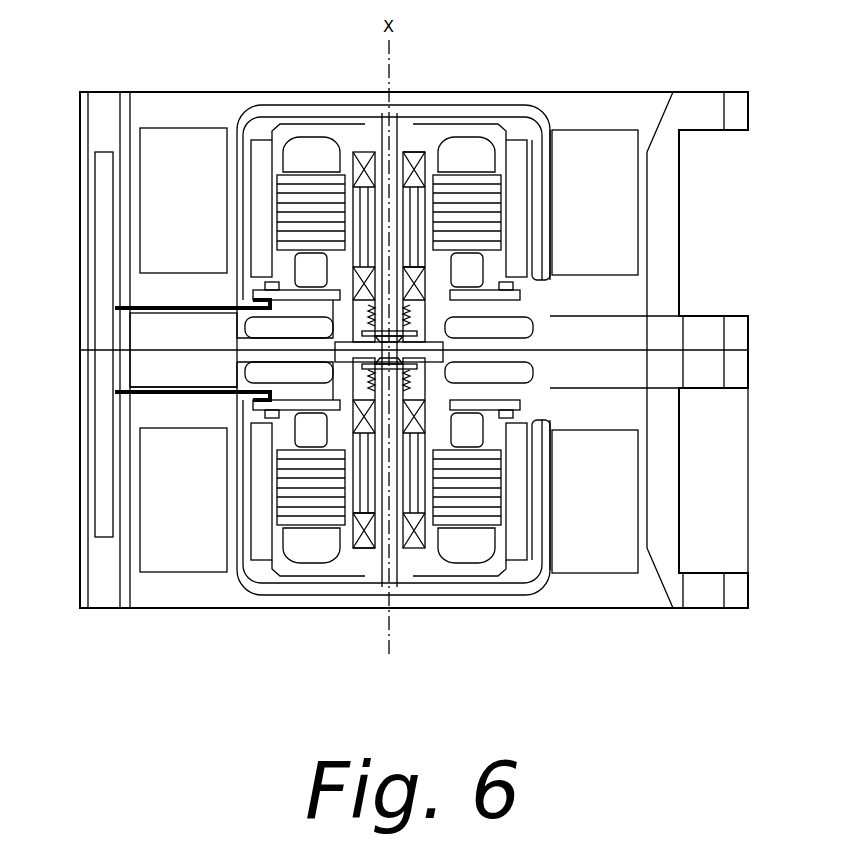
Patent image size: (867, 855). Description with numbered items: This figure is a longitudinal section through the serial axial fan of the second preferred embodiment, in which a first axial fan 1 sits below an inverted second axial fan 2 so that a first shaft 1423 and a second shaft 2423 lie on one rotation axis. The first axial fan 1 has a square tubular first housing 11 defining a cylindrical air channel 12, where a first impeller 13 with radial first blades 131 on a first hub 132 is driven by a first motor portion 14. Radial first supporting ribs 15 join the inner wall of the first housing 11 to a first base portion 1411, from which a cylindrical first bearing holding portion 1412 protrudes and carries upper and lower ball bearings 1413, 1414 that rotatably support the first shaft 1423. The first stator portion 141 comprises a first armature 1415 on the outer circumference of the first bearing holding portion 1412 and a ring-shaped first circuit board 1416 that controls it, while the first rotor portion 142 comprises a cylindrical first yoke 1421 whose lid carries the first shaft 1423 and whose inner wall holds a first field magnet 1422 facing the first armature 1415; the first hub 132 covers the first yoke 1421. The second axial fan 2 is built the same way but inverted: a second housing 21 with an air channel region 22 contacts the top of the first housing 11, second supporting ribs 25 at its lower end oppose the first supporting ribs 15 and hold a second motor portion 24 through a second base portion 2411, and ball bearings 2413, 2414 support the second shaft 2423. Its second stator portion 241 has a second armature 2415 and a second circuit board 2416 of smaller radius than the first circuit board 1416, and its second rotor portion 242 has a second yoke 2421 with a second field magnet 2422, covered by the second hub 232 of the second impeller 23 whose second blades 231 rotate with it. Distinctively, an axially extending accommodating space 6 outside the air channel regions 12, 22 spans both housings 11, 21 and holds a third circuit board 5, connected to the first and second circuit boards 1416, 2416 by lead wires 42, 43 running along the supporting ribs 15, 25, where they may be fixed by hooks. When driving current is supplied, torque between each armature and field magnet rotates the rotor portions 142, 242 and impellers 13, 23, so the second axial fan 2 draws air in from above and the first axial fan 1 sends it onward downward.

The first axial fan 1 is at (772, 466).
The second axial fan 2 is at (620, 68).
The third circuit board 5 is at (105, 160).
The accommodating space 6 is at (118, 117).
The first housing 11 is at (672, 457).
The air channel 12 is at (183, 513).
The first impeller 13 is at (205, 577).
The first motor portion 14 is at (494, 614).
The first supporting ribs 15 is at (150, 375).
The second housing 21 is at (668, 284).
The air channel region 22 is at (183, 187).
The second impeller 23 is at (195, 112).
The second motor portion 24 is at (490, 100).
The second supporting ribs 25 is at (147, 325).
The lead wire 42 is at (175, 306).
The first wire 43 is at (185, 388).
The first blades 131 is at (598, 563).
The first hub 132 is at (423, 593).
The first stator portion 141 is at (261, 483).
The first rotor portion 142 is at (547, 578).
The second blades 231 is at (600, 140).
The second hub 232 is at (268, 113).
The second stator portion 241 is at (261, 218).
The second rotor portion 242 is at (516, 122).
The first base portion 1411 is at (500, 390).
The first bearing holding portion 1412 is at (540, 498).
The ball bearing 1413 is at (300, 410).
The ball bearing 1414 is at (368, 560).
The first armature 1415 is at (290, 562).
The first circuit board 1416 is at (540, 450).
The first yoke 1421 is at (317, 580).
The first field magnet 1422 is at (257, 553).
The first shaft 1423 is at (395, 578).
The second base portion 2411 is at (530, 308).
The ball bearing 2413 is at (362, 288).
The ball bearing 2414 is at (423, 150).
The second armature 2415 is at (490, 198).
The second circuit board 2416 is at (508, 282).
The second yoke 2421 is at (320, 123).
The second field magnet 2422 is at (520, 235).
The second shaft 2423 is at (380, 118).